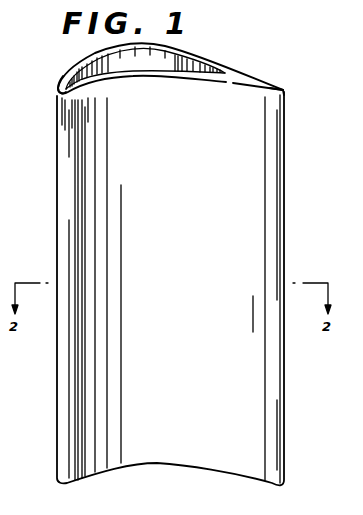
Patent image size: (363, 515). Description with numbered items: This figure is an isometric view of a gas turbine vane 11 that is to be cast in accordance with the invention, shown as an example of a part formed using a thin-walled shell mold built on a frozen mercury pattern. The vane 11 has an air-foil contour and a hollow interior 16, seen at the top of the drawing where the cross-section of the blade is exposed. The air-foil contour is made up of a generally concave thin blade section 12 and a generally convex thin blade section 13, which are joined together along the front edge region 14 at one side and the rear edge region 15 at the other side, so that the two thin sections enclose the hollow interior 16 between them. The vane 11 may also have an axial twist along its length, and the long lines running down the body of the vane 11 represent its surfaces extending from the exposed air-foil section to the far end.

The gas turbine vane 11 is at (69, 67).
The concave thin blade section 12 is at (191, 78).
The convex thin blade section 13 is at (195, 57).
The front edge region 14 is at (62, 88).
The rear edge region 15 is at (285, 90).
The hollow interior 16 is at (135, 66).